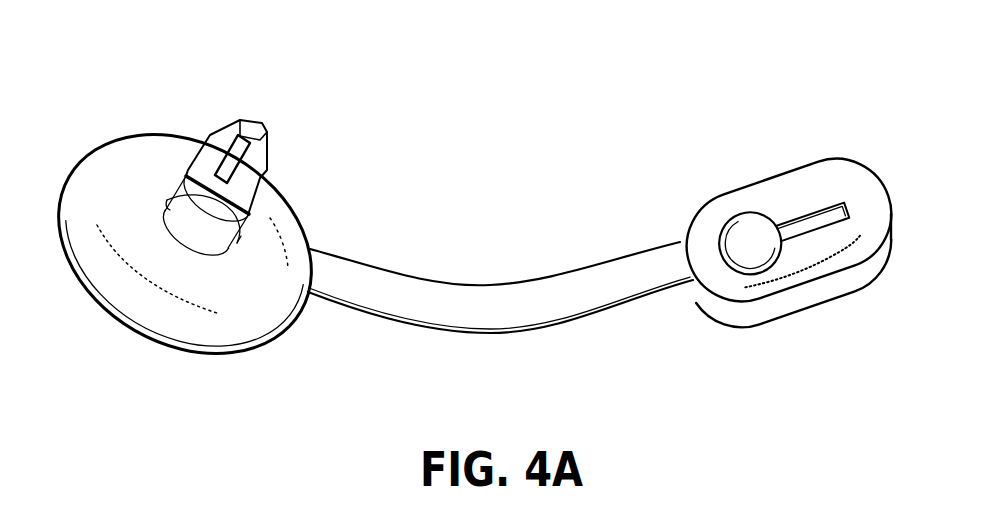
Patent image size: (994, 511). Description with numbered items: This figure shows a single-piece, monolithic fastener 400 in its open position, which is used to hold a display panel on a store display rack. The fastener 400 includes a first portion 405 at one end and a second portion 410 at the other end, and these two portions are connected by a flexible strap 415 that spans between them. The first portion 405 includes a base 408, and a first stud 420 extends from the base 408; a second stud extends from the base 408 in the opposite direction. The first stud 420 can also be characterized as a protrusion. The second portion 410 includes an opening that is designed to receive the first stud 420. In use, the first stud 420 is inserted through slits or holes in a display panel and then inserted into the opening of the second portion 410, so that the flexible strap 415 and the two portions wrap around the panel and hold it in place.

The fastener 400 is at (502, 157).
The first portion 405 is at (128, 132).
The base 408 is at (90, 253).
The second portion 410 is at (897, 180).
The flexible strap 415 is at (455, 335).
The first stud 420 is at (248, 135).